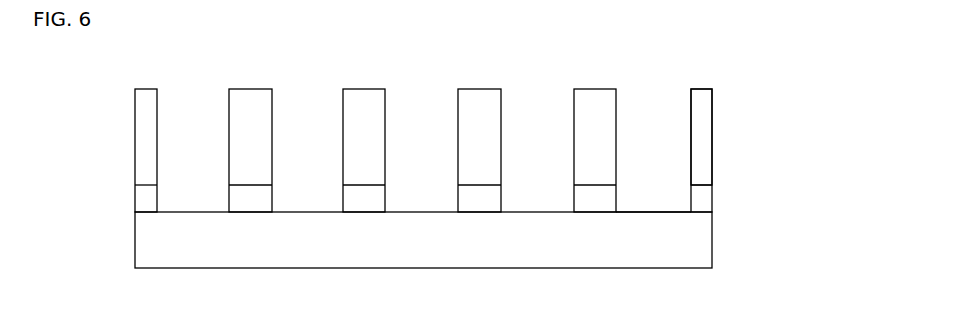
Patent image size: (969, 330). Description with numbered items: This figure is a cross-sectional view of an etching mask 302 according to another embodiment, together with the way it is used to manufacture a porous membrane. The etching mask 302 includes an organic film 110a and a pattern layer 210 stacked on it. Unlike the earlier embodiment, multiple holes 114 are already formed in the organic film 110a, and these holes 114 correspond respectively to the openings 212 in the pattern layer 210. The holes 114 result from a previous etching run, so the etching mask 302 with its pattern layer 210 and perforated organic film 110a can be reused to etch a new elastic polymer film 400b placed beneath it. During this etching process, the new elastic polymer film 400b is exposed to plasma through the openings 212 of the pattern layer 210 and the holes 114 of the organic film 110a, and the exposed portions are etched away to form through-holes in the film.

The etching mask 302 is at (123, 89).
The openings 212 is at (648, 121).
The pattern layer 210 is at (697, 151).
The organic film 110a is at (697, 199).
The new elastic polymer film 400b is at (680, 250).
The holes 114 is at (648, 193).